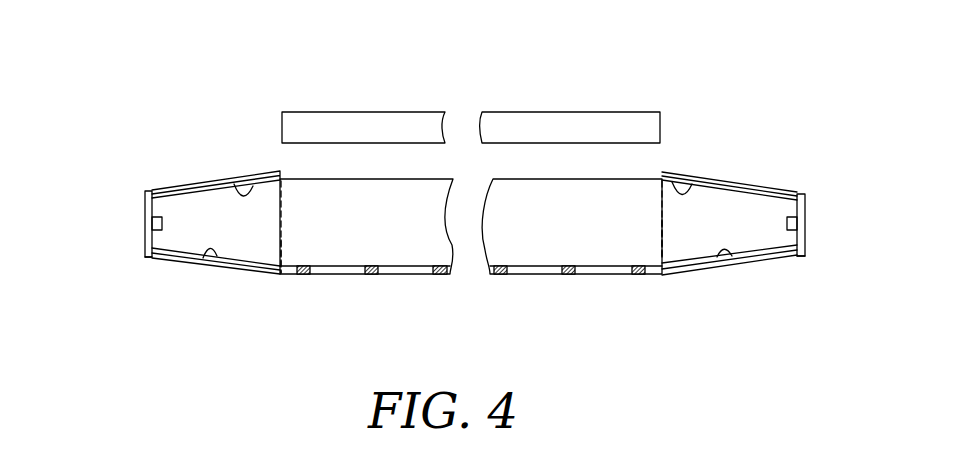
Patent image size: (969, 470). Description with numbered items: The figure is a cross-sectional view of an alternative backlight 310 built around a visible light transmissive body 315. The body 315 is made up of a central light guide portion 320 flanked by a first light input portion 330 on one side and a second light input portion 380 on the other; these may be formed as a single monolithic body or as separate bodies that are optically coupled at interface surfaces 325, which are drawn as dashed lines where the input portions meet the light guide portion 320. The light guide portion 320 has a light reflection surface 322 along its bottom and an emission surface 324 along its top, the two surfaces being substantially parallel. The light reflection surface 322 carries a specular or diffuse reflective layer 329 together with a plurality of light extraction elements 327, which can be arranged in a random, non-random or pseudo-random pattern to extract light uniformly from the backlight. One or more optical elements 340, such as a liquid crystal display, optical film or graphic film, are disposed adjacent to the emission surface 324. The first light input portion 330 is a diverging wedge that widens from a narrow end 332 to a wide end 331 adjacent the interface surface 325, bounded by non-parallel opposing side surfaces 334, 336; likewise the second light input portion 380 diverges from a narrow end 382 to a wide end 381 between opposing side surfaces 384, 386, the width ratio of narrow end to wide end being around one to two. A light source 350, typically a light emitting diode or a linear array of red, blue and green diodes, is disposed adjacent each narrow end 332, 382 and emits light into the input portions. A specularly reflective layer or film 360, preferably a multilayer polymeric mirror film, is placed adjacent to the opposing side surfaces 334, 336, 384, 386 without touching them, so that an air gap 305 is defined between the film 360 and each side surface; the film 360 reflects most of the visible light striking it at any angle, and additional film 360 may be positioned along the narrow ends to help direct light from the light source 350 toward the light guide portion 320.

The backlight 310 is at (413, 73).
The visible light transmissive body 315 is at (307, 172).
The light guide portion 320 is at (445, 170).
The light reflection surface 322 is at (602, 266).
The emission surface 324 is at (628, 179).
The interface surface 325 is at (284, 262).
The light extraction element 327 is at (570, 276).
The reflective layer 329 is at (393, 276).
The first light input portion 330 is at (459, 201).
The wide end 331 is at (279, 245).
The narrow end 332 is at (150, 194).
The opposing side surface 334 is at (233, 178).
The opposing side surface 336 is at (210, 262).
The optical element 340 is at (550, 125).
The light source 350 is at (165, 256).
The specularly reflective film 360 is at (187, 184).
The second light input portion 380 is at (770, 202).
The wide end 381 is at (663, 240).
The narrow end 382 is at (797, 196).
The opposing side surface 384 is at (692, 178).
The opposing side surface 386 is at (720, 260).
The air gap 305 is at (184, 251).